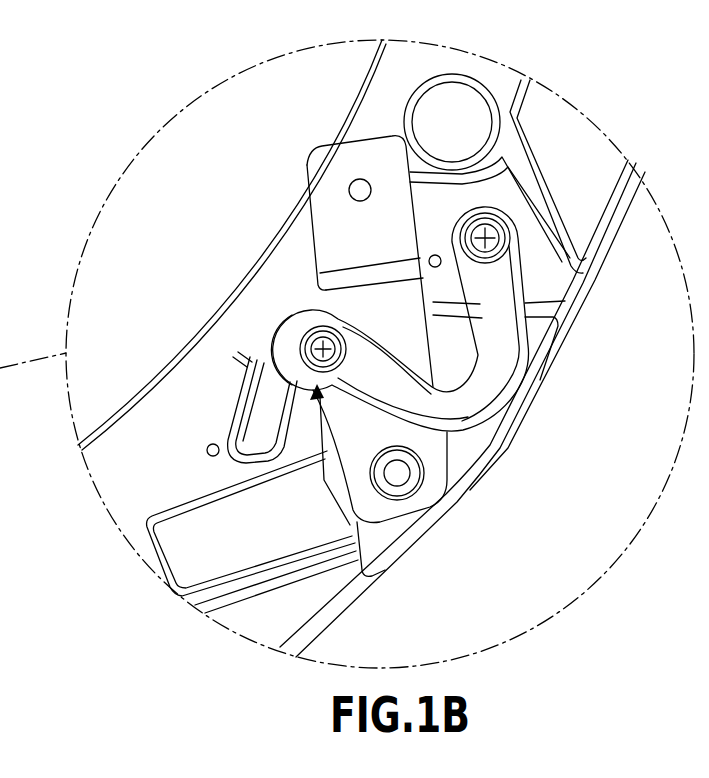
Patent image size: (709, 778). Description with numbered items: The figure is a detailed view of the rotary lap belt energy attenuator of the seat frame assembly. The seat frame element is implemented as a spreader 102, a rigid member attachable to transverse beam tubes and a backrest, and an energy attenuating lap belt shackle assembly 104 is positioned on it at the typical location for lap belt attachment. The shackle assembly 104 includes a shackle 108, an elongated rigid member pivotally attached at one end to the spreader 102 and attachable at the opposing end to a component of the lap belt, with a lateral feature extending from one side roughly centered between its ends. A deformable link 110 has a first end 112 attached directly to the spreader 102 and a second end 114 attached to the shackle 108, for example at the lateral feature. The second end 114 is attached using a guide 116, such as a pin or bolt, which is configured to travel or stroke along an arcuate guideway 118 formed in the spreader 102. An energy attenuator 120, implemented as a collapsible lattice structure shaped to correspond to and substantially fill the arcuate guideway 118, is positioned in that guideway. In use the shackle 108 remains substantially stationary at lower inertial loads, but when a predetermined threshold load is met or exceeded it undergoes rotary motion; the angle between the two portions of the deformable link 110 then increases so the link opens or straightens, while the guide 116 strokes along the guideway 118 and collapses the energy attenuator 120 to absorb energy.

The spreader 102 is at (355, 110).
The energy attenuating lap belt shackle assembly 104 is at (180, 155).
The shackle 108 is at (318, 209).
The deformable link 110 is at (490, 388).
The first end 112 is at (525, 243).
The second end 114 is at (372, 562).
The guide 116 is at (320, 343).
The arcuate guideway 118 is at (229, 393).
The energy attenuator 120 is at (290, 352).